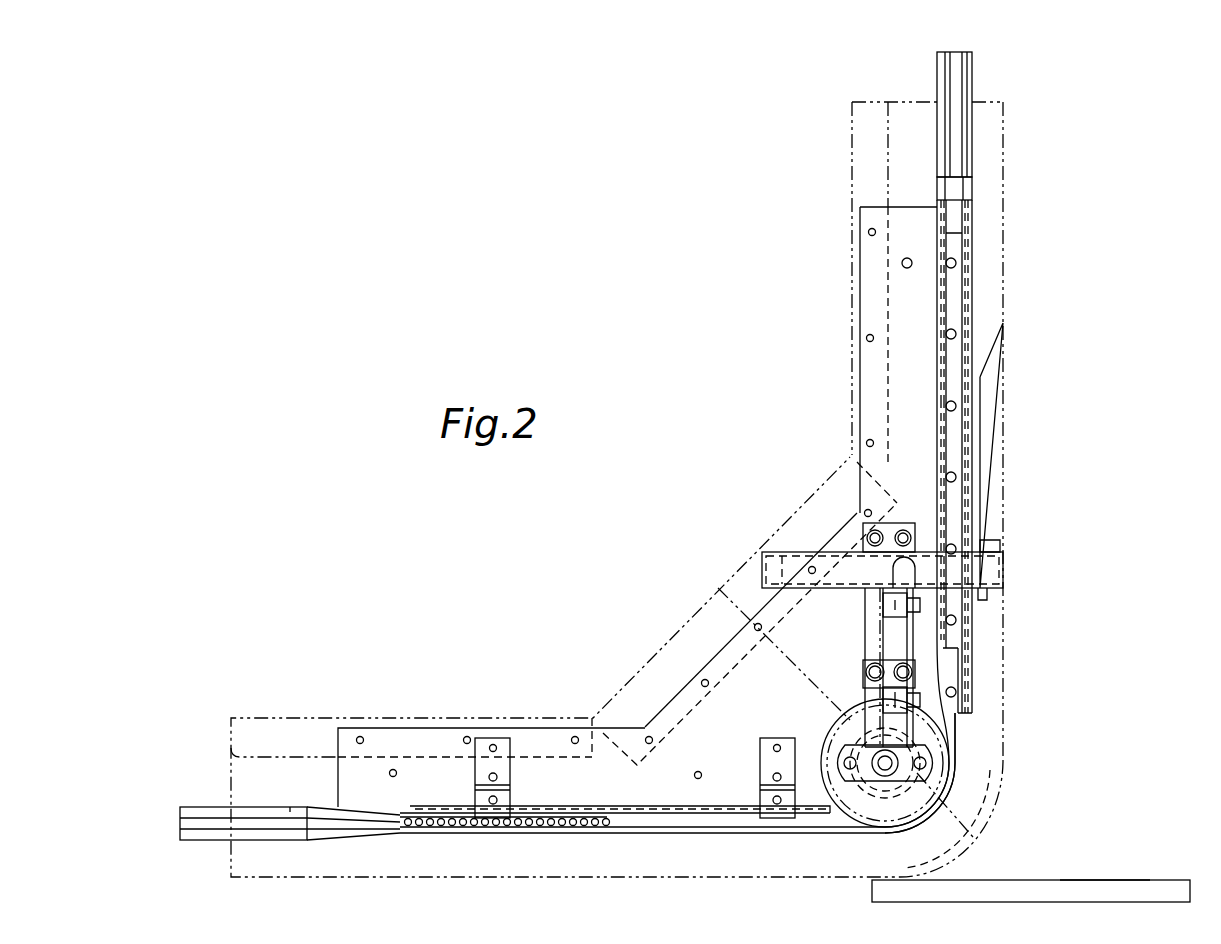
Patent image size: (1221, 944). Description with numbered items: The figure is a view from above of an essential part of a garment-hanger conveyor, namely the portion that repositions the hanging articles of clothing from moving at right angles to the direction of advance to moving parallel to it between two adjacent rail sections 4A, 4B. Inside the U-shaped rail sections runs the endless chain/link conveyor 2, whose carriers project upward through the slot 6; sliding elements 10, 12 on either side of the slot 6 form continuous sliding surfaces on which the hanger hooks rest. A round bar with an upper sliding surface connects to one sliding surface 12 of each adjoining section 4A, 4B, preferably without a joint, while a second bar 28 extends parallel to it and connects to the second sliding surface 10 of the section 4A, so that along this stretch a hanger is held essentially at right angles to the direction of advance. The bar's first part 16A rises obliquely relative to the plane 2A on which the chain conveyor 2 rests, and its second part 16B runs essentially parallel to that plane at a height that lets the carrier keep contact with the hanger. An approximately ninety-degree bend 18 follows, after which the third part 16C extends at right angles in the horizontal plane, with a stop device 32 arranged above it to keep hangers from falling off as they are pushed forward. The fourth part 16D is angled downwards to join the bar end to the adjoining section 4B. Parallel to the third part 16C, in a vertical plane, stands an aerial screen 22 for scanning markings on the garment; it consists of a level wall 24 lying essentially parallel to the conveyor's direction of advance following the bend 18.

The chain/link conveyor 2 is at (407, 822).
The plane 2A is at (830, 733).
The adjoining section 4A is at (975, 167).
The adjoining section 4B is at (200, 808).
The slot 6 is at (953, 145).
The sliding element/sliding surface 10 is at (967, 122).
The sliding element/sliding surface 12 is at (937, 165).
The first part of the bar 16A is at (938, 313).
The second part of the bar 16B is at (935, 490).
The third part of the bar 16C is at (620, 825).
The fourth part of the bar 16D is at (357, 815).
The bend 18 is at (950, 775).
The aerial screen 22 is at (1163, 870).
The level wall 24 is at (1105, 880).
The second bar 28 is at (975, 297).
The stop device 32 is at (668, 812).